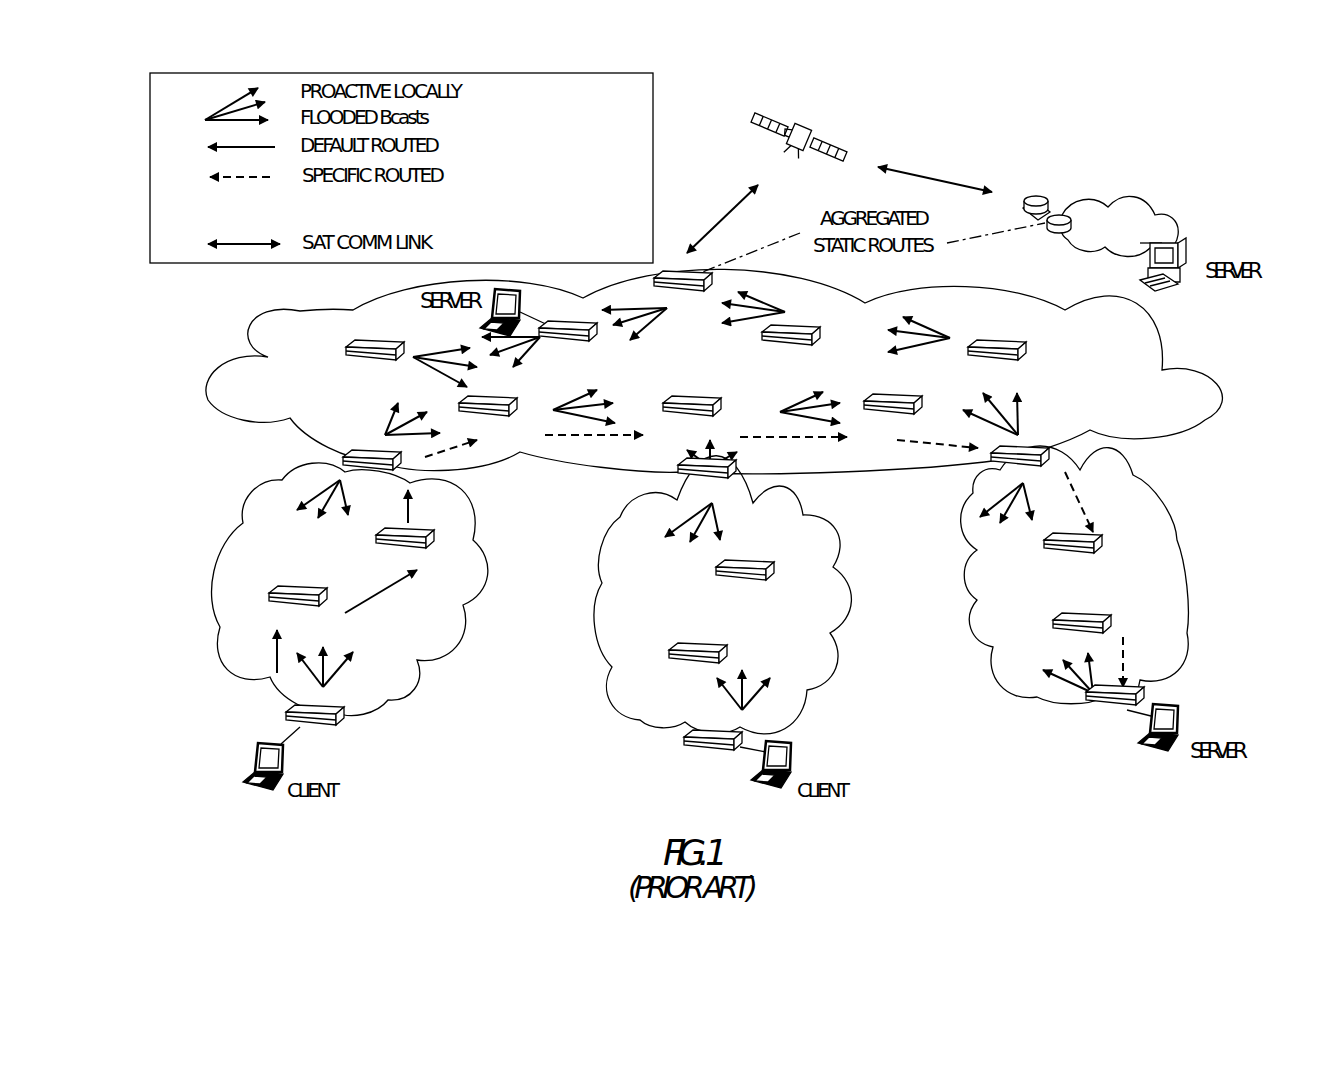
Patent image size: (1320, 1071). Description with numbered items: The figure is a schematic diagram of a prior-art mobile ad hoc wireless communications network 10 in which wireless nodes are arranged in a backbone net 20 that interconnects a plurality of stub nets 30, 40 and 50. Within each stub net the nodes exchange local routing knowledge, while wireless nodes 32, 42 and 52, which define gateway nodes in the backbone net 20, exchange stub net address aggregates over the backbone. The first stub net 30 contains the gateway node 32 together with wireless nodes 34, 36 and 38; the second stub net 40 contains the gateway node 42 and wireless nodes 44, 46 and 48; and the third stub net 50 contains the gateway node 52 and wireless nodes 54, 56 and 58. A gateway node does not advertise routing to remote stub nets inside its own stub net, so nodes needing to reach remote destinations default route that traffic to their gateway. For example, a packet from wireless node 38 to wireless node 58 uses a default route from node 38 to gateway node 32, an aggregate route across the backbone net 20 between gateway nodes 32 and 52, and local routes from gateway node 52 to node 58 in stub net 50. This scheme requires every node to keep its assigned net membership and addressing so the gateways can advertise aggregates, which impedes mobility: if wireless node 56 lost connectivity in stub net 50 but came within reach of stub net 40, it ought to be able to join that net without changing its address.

The ad hoc wireless communications network 10 is at (1052, 140).
The backbone net 20 is at (1230, 400).
The stub net 30 is at (397, 703).
The gateway node 32 is at (345, 458).
The wireless node 34 is at (438, 543).
The wireless node 36 is at (265, 603).
The wireless node 38 is at (285, 717).
The stub net 40 is at (807, 695).
The gateway node 42 is at (740, 475).
The wireless node 44 is at (775, 572).
The wireless node 46 is at (668, 654).
The wireless node 48 is at (688, 742).
The stub net 50 is at (1190, 653).
The gateway node 52 is at (1053, 452).
The wireless node 54 is at (1107, 547).
The wireless node 56 is at (1115, 622).
The wireless node 58 is at (1100, 708).